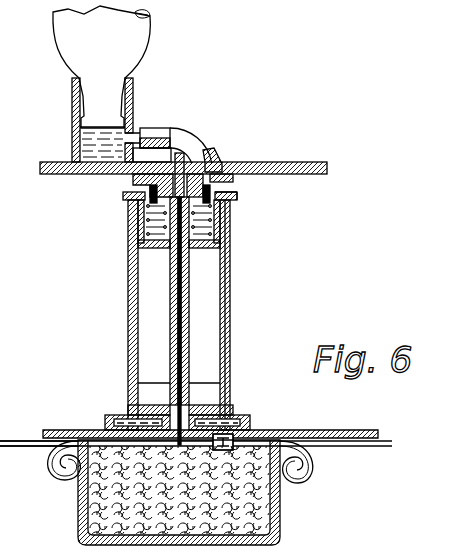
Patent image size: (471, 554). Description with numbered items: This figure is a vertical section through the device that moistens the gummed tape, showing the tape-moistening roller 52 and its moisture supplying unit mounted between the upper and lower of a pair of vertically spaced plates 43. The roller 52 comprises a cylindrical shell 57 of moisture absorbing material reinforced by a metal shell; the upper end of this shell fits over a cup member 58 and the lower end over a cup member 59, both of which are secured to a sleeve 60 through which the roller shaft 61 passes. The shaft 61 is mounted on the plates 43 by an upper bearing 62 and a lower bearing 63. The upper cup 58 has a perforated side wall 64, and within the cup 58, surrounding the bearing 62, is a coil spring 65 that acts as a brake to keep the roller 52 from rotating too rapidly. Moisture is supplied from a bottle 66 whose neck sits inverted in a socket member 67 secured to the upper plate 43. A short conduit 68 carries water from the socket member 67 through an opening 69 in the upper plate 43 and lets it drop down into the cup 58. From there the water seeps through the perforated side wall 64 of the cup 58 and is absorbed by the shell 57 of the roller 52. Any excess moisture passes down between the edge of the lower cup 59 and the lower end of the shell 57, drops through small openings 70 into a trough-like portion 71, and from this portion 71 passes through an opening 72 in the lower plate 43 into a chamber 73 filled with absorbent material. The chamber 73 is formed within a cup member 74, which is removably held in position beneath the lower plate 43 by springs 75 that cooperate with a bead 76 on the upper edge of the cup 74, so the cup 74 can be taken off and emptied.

The plates 43 is at (298, 162).
The tape-moistening roller 52 is at (232, 292).
The cylindrical shell 57 is at (232, 272).
The cup member 58 is at (136, 230).
The cup member 59 is at (150, 390).
The sleeve 60 is at (170, 268).
The roller shaft 61 is at (178, 328).
The bearing 62 is at (150, 184).
The bearing 63 is at (192, 412).
The perforated side wall 64 is at (233, 215).
The coil spring 65 is at (154, 203).
The bottle 66 is at (132, 33).
The socket member 67 is at (135, 100).
The short conduit 68 is at (178, 138).
The opening 69 is at (220, 163).
The small openings 70 is at (128, 410).
The trough-like portion 71 is at (238, 420).
The opening 72 is at (235, 437).
The chamber 73 is at (245, 493).
The cup member 74 is at (86, 518).
The springs 75 is at (55, 470).
The bead 76 is at (52, 447).